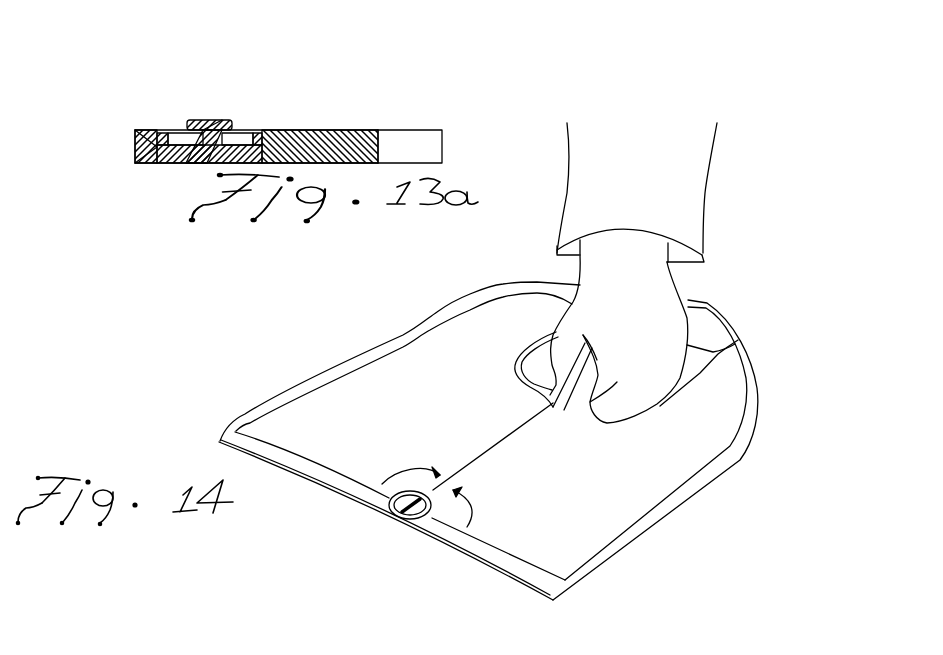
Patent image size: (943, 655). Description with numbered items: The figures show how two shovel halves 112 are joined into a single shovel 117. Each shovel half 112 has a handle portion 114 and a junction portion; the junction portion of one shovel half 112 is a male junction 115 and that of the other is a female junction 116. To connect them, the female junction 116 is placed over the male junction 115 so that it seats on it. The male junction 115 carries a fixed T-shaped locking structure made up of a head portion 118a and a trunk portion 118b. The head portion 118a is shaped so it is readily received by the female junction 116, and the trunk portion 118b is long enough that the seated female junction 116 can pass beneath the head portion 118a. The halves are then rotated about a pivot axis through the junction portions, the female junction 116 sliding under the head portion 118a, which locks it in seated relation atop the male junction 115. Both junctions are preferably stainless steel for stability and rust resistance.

In FIG. 14, the shovel half 112 is at (600, 0).
In FIG. 14, the handle portion 114 is at (573, 394).
In FIG. 13A, the male junction 115 is at (192, 175).
In FIG. 14, the male junction 115 is at (363, 529).
In FIG. 13A, the female junction 116 is at (240, 94).
In FIG. 14, the female junction 116 is at (421, 540).
In FIG. 14, the shovel 117 is at (724, 283).
In FIG. 13A, the head portion 118a is at (209, 73).
In FIG. 13A, the trunk portion 118b is at (177, 75).